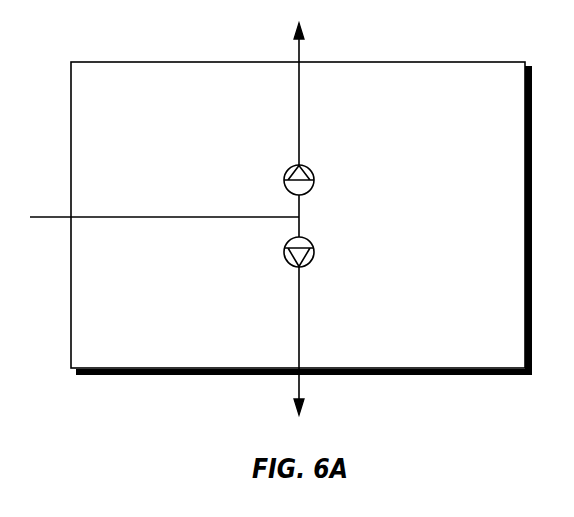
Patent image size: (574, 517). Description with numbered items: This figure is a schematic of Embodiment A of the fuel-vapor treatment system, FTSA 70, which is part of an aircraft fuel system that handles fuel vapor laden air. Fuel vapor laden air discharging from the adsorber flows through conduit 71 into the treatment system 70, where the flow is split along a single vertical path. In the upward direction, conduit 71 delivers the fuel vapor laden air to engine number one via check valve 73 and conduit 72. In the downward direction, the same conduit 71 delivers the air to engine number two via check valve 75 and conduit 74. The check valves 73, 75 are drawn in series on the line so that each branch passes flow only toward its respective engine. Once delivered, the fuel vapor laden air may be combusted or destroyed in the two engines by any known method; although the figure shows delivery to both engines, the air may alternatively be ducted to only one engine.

The fuel-vapor treatment system Embodiment A (FTSA) 70 is at (175, 62).
The conduit 71 is at (191, 218).
The conduit 72 is at (299, 112).
The check valve 73 is at (314, 181).
The conduit 74 is at (299, 310).
The check valve 75 is at (314, 253).